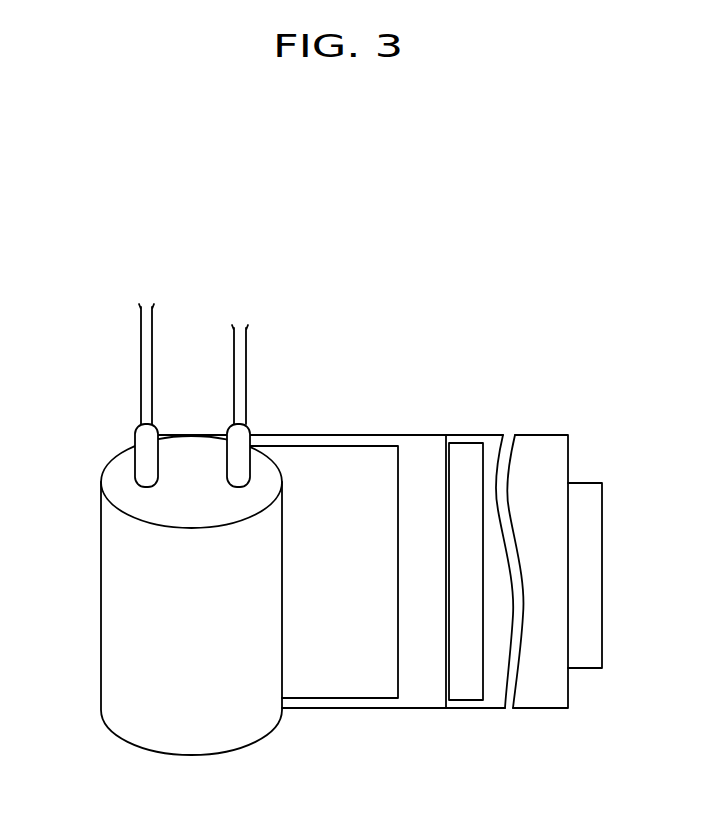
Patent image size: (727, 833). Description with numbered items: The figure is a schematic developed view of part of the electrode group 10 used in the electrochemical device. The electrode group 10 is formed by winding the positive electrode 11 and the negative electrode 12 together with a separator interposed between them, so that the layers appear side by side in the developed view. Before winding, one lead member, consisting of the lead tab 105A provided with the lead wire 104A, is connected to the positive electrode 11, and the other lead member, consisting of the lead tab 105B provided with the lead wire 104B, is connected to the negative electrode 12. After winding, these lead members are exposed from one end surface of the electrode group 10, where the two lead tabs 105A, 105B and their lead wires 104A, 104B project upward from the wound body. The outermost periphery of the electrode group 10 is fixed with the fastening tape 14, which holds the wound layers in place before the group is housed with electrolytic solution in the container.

The electrode group 10 is at (335, 508).
The positive electrode 11 is at (383, 683).
The negative electrode 12 is at (468, 690).
The fastening tape 14 is at (585, 658).
The lead wire 104A is at (147, 341).
The lead wire 104B is at (242, 345).
The lead tab 105A is at (145, 440).
The lead tab 105B is at (240, 444).